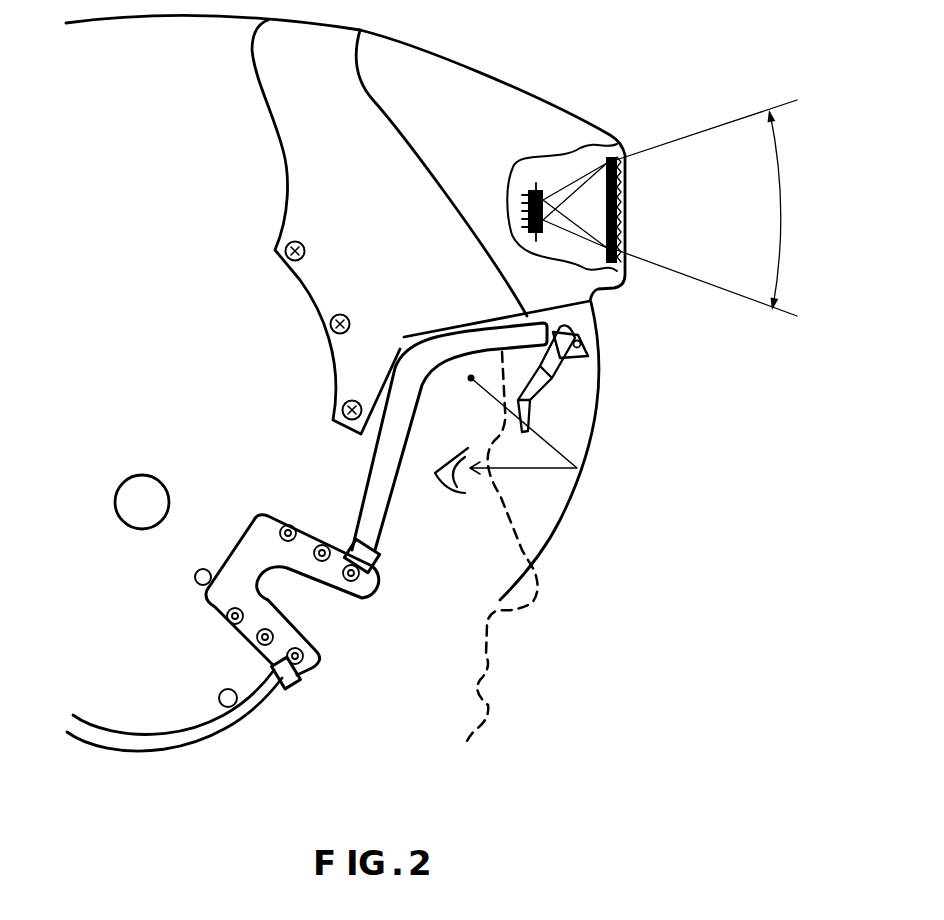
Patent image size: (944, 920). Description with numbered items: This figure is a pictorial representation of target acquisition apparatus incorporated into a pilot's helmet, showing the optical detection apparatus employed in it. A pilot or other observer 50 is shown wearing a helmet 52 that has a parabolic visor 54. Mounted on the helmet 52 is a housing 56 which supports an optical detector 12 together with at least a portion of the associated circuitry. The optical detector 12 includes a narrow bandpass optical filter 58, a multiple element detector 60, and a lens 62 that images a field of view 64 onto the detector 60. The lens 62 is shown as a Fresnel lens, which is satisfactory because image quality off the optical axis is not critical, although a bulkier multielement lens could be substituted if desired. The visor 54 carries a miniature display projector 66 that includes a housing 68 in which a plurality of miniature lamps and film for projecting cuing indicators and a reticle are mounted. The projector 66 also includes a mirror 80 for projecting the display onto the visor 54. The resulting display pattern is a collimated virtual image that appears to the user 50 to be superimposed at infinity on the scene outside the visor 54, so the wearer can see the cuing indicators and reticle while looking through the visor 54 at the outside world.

The optical detector 12 is at (624, 299).
The pilot 50 is at (500, 748).
The helmet 52 is at (203, 743).
The parabolic visor 54 is at (563, 507).
The housing 56 is at (423, 44).
The narrow bandpass optical filter 58 is at (627, 175).
The multiple element detector 60 is at (535, 186).
The lens 62 is at (627, 240).
The field of view 64 is at (785, 205).
The miniature display projector 66 is at (615, 348).
The housing 68 is at (565, 366).
The mirror 80 is at (523, 432).